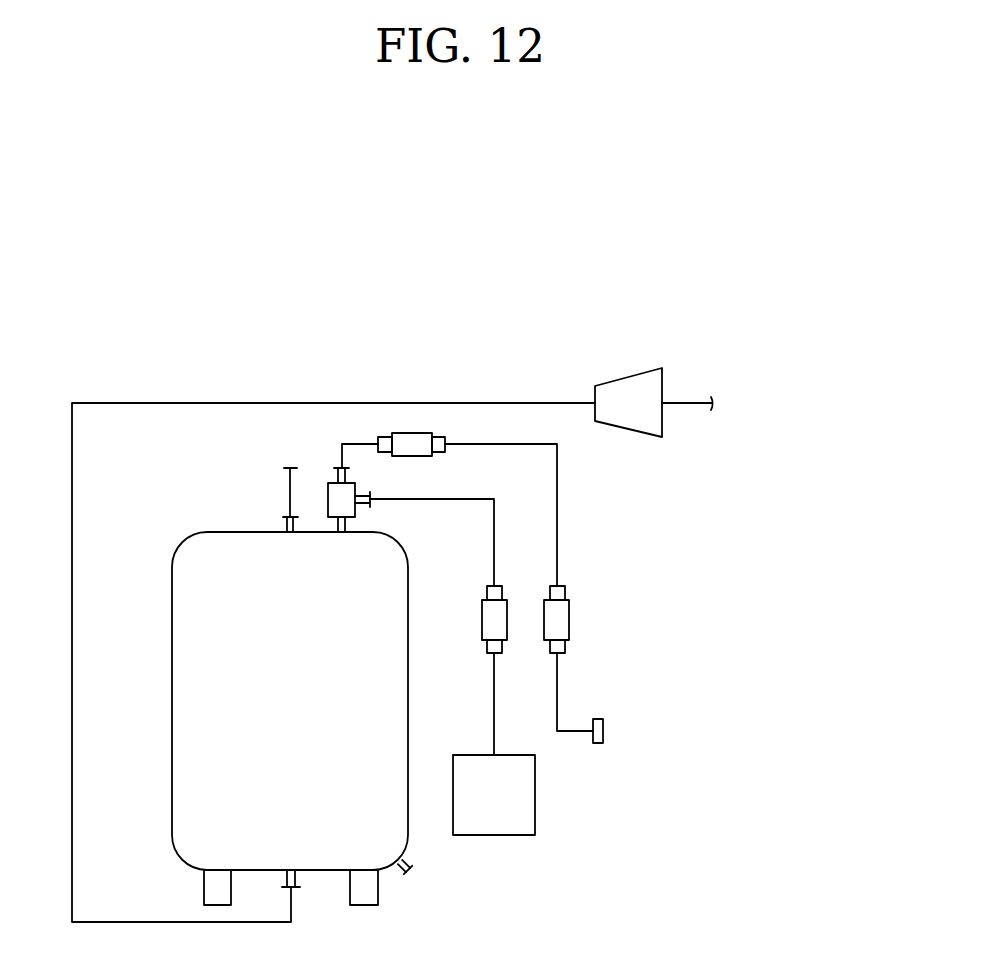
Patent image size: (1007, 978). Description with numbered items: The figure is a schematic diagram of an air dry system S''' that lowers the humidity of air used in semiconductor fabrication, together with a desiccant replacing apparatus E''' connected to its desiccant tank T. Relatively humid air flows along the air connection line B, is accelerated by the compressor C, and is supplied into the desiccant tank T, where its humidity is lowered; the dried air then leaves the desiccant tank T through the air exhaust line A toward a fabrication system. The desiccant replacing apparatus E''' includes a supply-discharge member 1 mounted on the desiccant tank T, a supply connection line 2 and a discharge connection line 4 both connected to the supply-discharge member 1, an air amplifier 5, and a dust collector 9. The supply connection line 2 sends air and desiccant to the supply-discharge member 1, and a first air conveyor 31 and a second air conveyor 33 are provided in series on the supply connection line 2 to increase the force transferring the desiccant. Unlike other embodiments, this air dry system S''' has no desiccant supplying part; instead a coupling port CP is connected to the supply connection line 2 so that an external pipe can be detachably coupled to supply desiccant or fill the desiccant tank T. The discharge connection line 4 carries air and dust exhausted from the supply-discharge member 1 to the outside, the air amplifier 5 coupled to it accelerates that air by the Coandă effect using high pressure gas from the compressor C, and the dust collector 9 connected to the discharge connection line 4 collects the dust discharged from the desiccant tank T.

The desiccant tank T is at (172, 677).
The air connection line B is at (342, 400).
The compressor C is at (628, 375).
The first air conveyor 31 is at (392, 432).
The air exhaust line A is at (288, 478).
The supply-discharge member 1 is at (328, 507).
The discharge connection line 4 is at (497, 675).
The air amplifier 5 is at (503, 593).
The supply connection line 2 is at (558, 700).
The second air conveyor 33 is at (572, 620).
The coupling port CP is at (608, 730).
The dust collector 9 is at (538, 798).
The air dry system S''' is at (767, 286).
The desiccant replacing apparatus E''' is at (773, 462).